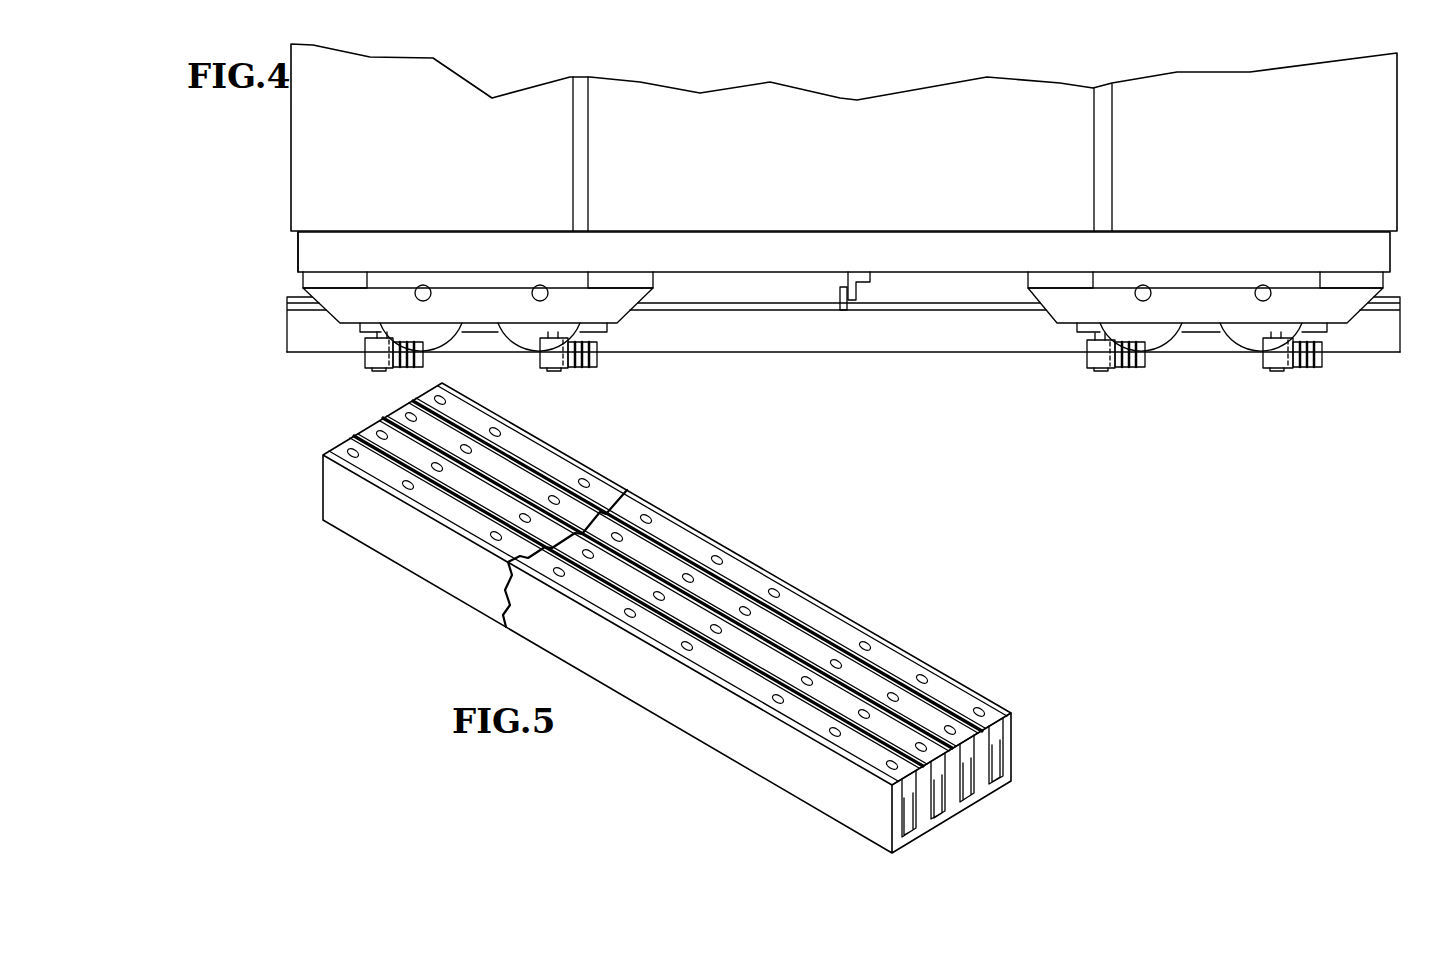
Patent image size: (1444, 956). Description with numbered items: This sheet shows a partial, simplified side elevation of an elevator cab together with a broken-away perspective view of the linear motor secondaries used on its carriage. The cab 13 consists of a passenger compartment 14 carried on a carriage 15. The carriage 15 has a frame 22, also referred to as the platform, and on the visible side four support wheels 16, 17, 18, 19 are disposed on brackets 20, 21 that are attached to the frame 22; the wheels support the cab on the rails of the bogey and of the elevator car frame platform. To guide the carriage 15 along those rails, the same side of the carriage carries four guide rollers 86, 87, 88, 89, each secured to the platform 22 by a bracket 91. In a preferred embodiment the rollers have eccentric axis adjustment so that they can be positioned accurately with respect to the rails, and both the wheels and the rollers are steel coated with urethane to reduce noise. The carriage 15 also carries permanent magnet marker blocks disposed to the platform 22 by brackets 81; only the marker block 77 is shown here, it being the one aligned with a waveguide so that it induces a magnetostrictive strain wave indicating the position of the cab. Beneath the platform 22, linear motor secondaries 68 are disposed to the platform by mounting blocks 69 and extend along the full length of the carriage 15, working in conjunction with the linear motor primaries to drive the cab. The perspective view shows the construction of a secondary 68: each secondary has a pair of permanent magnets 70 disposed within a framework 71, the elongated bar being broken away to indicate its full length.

In FIG. 4, the cab 13 is at (855, 94).
In FIG. 4, the passenger compartment 14 is at (842, 157).
In FIG. 4, the carriage 15 is at (290, 246).
In FIG. 4, the wheel 16 is at (418, 336).
In FIG. 4, the wheel 17 is at (545, 334).
In FIG. 4, the wheel 18 is at (1137, 335).
In FIG. 4, the wheel 19 is at (1268, 334).
In FIG. 4, the bracket 20 is at (488, 311).
In FIG. 4, the bracket 21 is at (1211, 311).
In FIG. 4, the frame 22 is at (738, 266).
In FIG. 4, the linear motor secondary 68 is at (297, 330).
In FIG. 5, the linear motor secondary 68 is at (993, 788).
In FIG. 4, the mounting block 69 is at (303, 290).
In FIG. 5, the permanent magnet 70 is at (990, 760).
In FIG. 5, the framework 71 is at (985, 748).
In FIG. 4, the permanent magnet marker block 77 is at (840, 300).
In FIG. 4, the bracket 81 is at (862, 284).
In FIG. 4, the guide roller 86 is at (375, 362).
In FIG. 4, the guide roller 87 is at (578, 362).
In FIG. 4, the guide roller 88 is at (1103, 362).
In FIG. 4, the guide roller 89 is at (1278, 364).
In FIG. 4, the bracket 91 is at (612, 330).